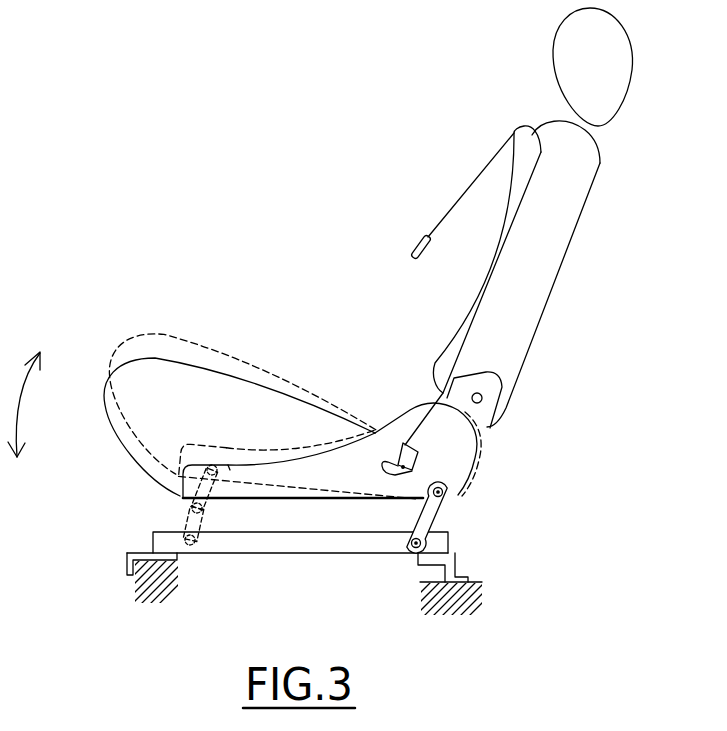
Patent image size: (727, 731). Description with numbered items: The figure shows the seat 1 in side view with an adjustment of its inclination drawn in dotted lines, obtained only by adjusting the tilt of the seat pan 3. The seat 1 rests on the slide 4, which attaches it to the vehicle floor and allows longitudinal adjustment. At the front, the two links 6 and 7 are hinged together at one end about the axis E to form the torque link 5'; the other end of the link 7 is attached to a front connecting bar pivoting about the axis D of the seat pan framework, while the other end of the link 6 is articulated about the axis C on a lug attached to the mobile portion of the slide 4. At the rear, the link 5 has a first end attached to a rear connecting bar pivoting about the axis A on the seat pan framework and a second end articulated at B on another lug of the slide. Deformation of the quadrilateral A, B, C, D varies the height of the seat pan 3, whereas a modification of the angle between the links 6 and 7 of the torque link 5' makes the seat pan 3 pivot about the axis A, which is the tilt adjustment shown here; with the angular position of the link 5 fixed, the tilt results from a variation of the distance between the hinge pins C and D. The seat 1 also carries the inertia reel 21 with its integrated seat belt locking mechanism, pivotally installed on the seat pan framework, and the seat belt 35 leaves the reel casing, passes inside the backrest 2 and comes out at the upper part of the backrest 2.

The seat 1 is at (324, 196).
The backrest 2 is at (565, 217).
The seat cushion 3 is at (109, 432).
The slide 4 is at (312, 540).
The link 5 is at (459, 517).
The torque link 5' is at (135, 533).
The link 6 is at (190, 518).
The link 7 is at (195, 482).
The inertia reel 21 is at (408, 442).
The seat belt 35 is at (477, 297).
The axis A is at (450, 488).
The articulation point B is at (412, 547).
The axis C is at (192, 545).
The axis D is at (219, 469).
The axis E is at (210, 508).